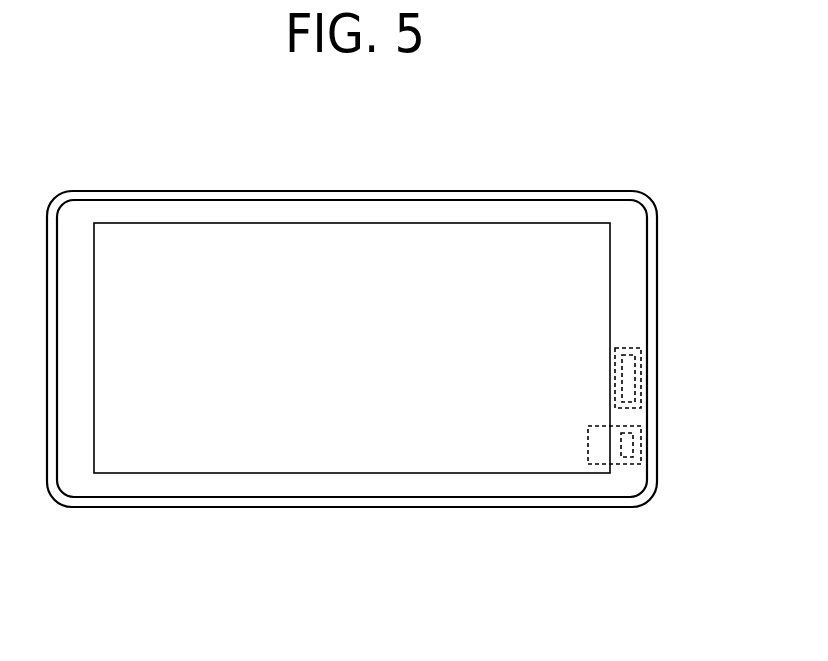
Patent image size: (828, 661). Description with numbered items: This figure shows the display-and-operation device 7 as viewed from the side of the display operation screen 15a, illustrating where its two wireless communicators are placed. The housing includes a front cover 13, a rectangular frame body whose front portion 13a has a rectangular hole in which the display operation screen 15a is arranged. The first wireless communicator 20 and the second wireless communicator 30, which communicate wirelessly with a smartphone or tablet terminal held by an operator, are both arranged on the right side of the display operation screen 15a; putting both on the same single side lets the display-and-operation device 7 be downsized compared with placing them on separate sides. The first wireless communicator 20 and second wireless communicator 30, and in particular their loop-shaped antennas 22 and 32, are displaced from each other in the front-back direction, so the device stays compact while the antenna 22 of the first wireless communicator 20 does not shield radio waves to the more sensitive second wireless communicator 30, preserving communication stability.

The display-and-operation device 7 is at (495, 172).
The front cover 13 is at (205, 190).
The front portion 13a is at (292, 208).
The display operation screen 15a is at (412, 253).
The first wireless communicator 20 is at (632, 347).
The antenna 22 is at (635, 372).
The second wireless communicator 30 is at (625, 465).
The antenna 32 is at (632, 447).